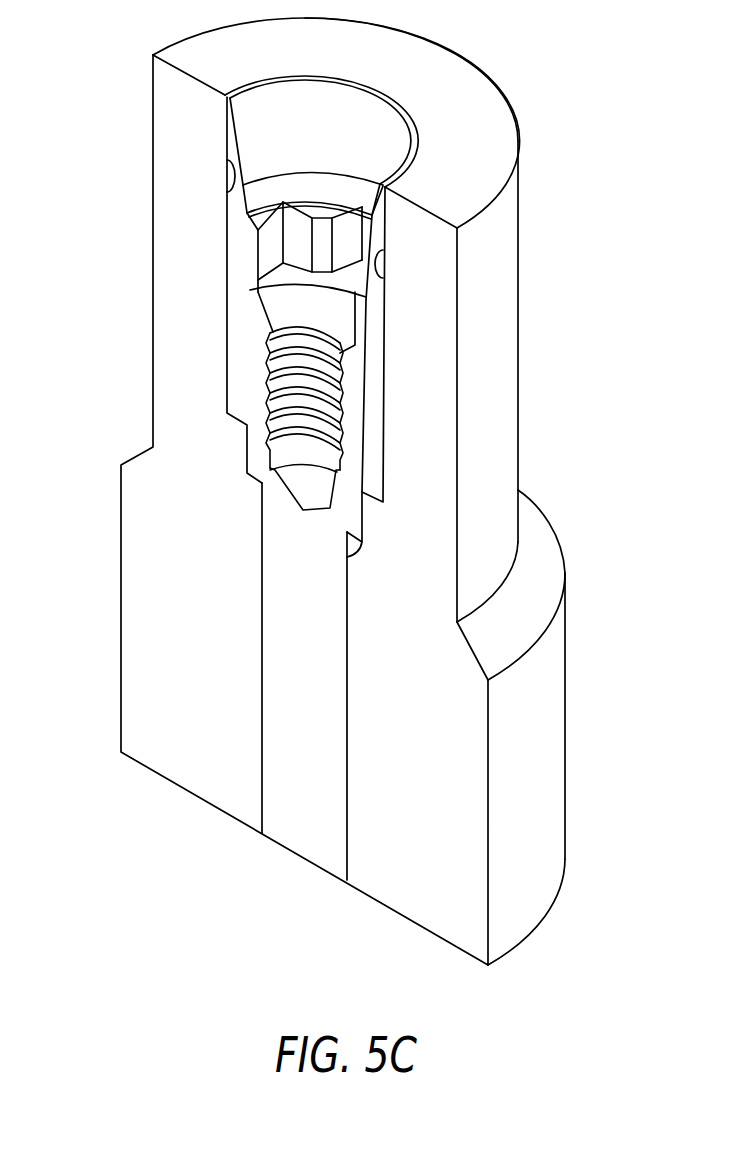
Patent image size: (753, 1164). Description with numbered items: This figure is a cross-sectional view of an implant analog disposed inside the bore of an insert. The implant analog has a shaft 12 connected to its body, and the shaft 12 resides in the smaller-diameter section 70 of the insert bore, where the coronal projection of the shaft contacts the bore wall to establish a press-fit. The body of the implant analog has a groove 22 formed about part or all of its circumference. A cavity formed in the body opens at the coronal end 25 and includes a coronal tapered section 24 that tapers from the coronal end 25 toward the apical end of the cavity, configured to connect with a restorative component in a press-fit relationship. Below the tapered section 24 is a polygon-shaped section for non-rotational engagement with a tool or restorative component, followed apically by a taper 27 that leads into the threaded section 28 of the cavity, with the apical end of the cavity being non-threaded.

The shaft 12 is at (302, 702).
The groove 22 is at (228, 178).
The tapered section 24 is at (325, 127).
The coronal end 25 is at (397, 115).
The taper 27 is at (285, 308).
The threaded section 28 is at (307, 365).
The smaller-diameter section 70 is at (347, 805).